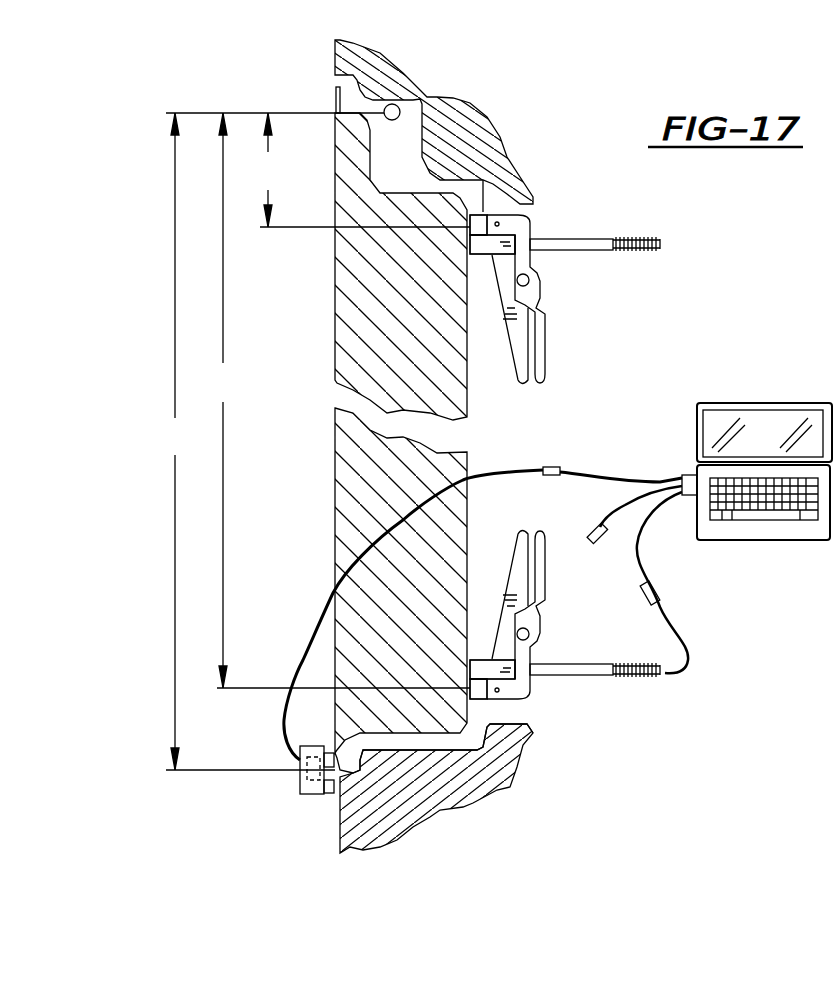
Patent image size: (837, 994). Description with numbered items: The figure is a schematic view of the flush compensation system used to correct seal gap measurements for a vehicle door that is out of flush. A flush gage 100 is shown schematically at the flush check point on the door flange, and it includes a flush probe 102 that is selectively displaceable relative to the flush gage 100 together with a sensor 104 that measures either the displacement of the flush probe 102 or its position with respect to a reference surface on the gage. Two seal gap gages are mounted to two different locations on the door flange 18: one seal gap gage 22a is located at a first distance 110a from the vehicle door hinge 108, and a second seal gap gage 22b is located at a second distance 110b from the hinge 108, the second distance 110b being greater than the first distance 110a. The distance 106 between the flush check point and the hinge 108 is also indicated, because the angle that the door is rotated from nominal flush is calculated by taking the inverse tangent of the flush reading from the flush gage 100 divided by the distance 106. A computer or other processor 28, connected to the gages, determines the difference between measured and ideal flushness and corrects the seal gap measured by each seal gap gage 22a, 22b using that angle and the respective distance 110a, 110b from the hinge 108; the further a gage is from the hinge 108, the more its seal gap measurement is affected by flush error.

The vehicle doorway frame member 18 is at (485, 213).
The seal gap gage 22a is at (540, 295).
The second seal gap gage 22b is at (520, 590).
The computer or other processor 28 is at (707, 470).
The flush gage 100 is at (300, 790).
The flush probe 102 is at (327, 795).
The sensor 104 is at (300, 775).
The distance 106 is at (173, 441).
The vehicle door hinge 108 is at (400, 112).
The distance 110a is at (272, 170).
The second distance 110b is at (225, 400).